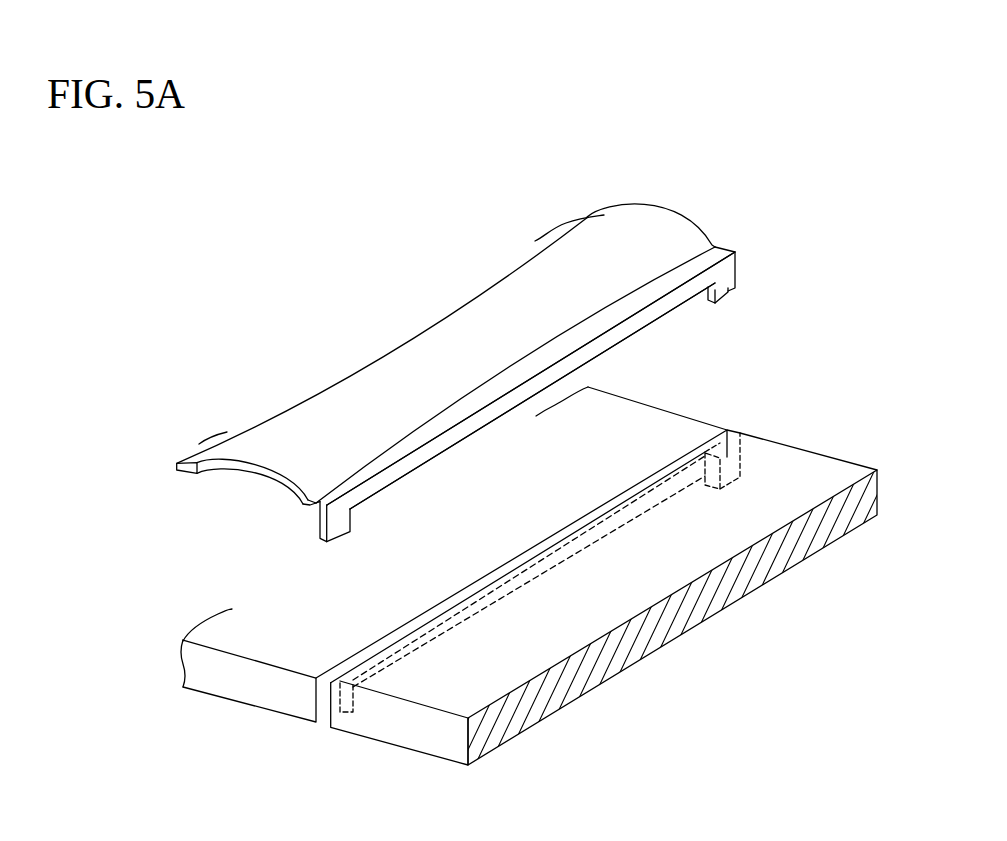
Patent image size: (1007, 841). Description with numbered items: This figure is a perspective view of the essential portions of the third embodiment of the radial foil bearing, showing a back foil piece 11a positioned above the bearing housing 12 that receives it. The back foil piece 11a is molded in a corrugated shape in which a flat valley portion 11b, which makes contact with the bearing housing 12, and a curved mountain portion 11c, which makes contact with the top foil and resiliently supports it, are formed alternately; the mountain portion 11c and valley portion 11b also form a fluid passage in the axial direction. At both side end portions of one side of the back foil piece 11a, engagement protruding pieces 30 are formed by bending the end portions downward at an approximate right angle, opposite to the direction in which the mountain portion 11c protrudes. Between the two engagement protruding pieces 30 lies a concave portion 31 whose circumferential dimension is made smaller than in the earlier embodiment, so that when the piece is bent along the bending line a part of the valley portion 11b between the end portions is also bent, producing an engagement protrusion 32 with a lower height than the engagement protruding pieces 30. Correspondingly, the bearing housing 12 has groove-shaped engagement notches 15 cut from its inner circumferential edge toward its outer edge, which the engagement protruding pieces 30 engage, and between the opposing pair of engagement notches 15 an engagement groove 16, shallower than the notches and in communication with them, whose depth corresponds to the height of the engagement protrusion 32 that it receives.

The back foil piece 11a is at (678, 206).
The valley portion 11b is at (588, 218).
The mountain portion 11c is at (333, 415).
The bearing housing 12 is at (237, 685).
The engagement notch 15 is at (323, 698).
The engagement groove 16 is at (531, 557).
The engagement protruding piece 30 is at (339, 521).
The concave portion 31 is at (406, 480).
The engagement protrusion 32 is at (463, 443).